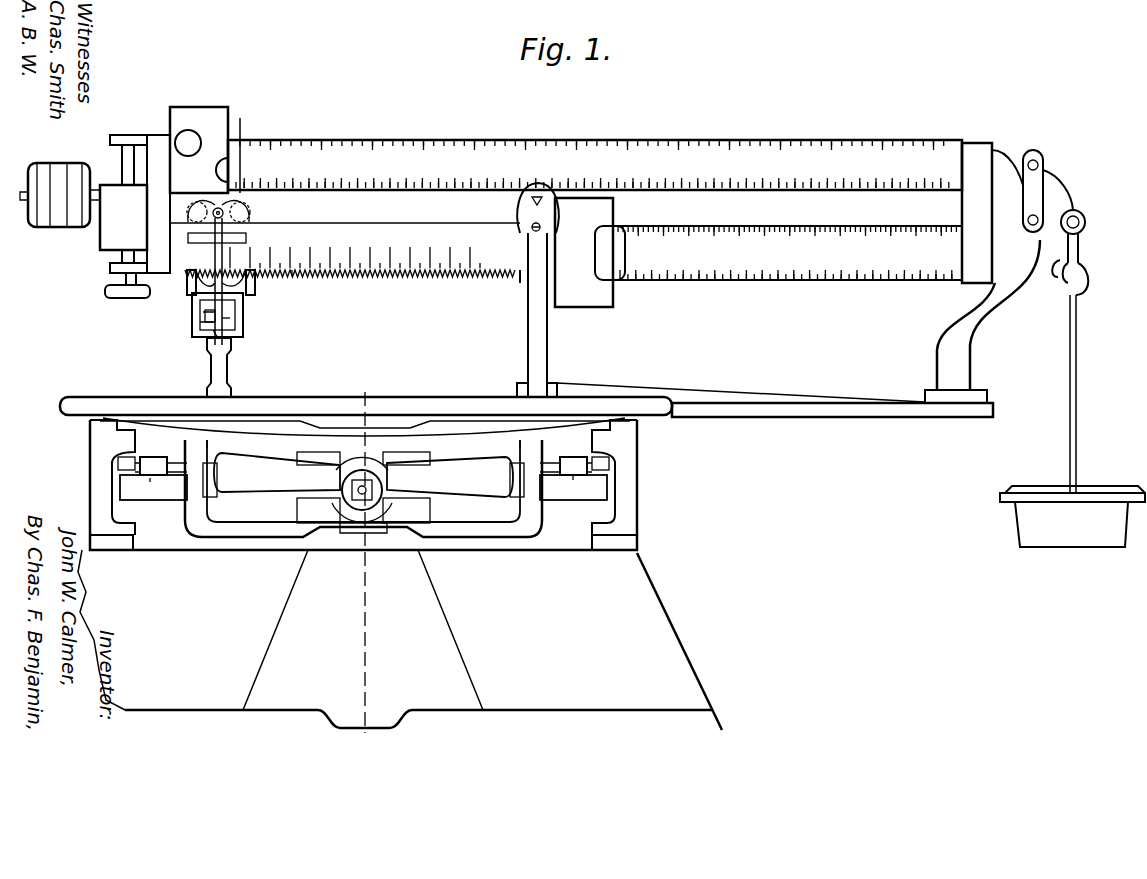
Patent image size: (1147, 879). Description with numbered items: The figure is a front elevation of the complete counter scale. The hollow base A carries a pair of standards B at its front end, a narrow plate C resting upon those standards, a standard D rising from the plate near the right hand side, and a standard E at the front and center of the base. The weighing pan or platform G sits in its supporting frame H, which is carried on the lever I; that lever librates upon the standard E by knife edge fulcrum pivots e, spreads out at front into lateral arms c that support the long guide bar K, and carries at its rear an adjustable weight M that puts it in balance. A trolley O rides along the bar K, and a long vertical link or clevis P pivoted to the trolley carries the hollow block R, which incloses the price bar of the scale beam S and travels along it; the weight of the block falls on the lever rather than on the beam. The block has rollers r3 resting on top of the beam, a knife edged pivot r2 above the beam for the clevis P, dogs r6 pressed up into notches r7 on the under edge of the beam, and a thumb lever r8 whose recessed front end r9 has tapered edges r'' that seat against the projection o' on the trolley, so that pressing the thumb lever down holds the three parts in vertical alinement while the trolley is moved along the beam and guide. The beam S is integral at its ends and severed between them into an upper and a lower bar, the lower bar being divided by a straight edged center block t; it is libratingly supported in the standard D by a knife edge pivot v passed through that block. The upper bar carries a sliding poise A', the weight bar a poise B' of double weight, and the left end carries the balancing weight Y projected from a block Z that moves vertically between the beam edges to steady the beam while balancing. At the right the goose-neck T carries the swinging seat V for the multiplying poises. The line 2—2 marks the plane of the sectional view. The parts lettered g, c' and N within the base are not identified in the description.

The sliding poise A' is at (203, 132).
The section line 2 is at (365, 745).
The scale beam S is at (610, 195).
The poise B' is at (758, 252).
The knife edge pivot v is at (530, 200).
The standard D is at (527, 352).
The center block t is at (521, 278).
The block Z is at (123, 217).
The balancing weight Y is at (67, 222).
The link P is at (247, 296).
The rollers r3 is at (265, 212).
The knife edged pivot r2 is at (228, 210).
The dogs r6 is at (186, 285).
The hollow block R is at (193, 300).
The edges of the recess r'' is at (247, 327).
The notches r7 is at (294, 272).
The recess r9 is at (203, 312).
The thumb lever r8 is at (222, 318).
The projection o' is at (194, 355).
The trolley O is at (228, 383).
The weighing pan G is at (365, 420).
The narrow plate C is at (760, 408).
The supporting frame H is at (515, 436).
The standards B is at (354, 485).
The pivot g is at (118, 478).
The bar K is at (173, 462).
The lateral arms c is at (363, 500).
The bearing c' is at (350, 509).
The standard E is at (387, 548).
The inner channel N is at (422, 509).
The knife edge fulcrum pivots e is at (212, 463).
The lever I is at (260, 503).
The adjustable weight M is at (338, 501).
The hollow base A is at (400, 640).
The goose-neck T is at (886, 321).
The swinging seat V is at (1072, 505).